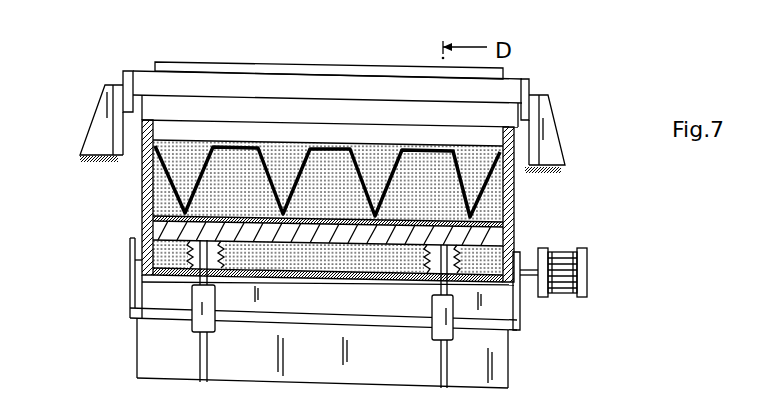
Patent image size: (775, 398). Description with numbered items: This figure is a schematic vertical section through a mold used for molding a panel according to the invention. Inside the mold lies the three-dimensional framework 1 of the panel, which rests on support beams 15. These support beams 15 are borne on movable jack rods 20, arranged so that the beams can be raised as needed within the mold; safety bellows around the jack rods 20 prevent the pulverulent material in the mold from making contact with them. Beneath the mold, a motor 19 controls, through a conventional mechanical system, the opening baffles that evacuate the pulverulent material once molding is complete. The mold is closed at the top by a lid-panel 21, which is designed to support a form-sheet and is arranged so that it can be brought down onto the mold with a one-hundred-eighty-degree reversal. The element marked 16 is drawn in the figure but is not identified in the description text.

The three-dimensional framework 1 is at (300, 184).
The support beams 15 is at (361, 236).
The housing / trough 16 is at (494, 199).
The motor 19 is at (584, 292).
The jack rods 20 is at (214, 326).
The lid-panel 21 is at (280, 88).